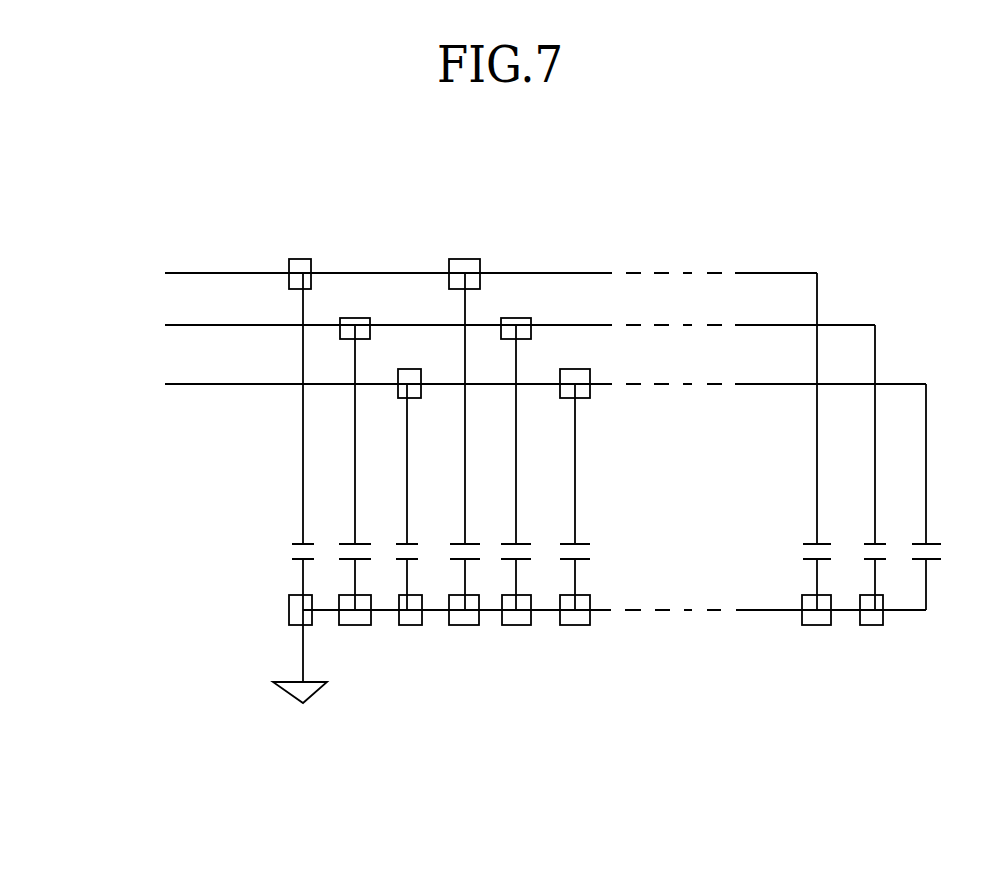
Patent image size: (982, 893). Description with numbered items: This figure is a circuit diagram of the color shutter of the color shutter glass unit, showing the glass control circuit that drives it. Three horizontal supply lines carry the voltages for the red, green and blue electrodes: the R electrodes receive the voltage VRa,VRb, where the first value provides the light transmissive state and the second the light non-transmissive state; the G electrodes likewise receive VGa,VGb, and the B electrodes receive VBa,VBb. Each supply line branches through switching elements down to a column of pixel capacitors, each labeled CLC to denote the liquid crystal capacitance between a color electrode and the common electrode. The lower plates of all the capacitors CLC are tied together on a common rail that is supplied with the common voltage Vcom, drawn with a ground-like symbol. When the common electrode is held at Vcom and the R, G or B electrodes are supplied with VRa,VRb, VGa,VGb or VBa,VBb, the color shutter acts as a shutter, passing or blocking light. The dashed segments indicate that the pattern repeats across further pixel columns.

The R electrode voltages VRa,VRb is at (440, 272).
The G electrode voltages VGa,VGb is at (467, 324).
The B electrode voltages VBa,VBb is at (494, 384).
The liquid crystal capacitance CLC is at (579, 553).
The common voltage Vcom is at (311, 656).